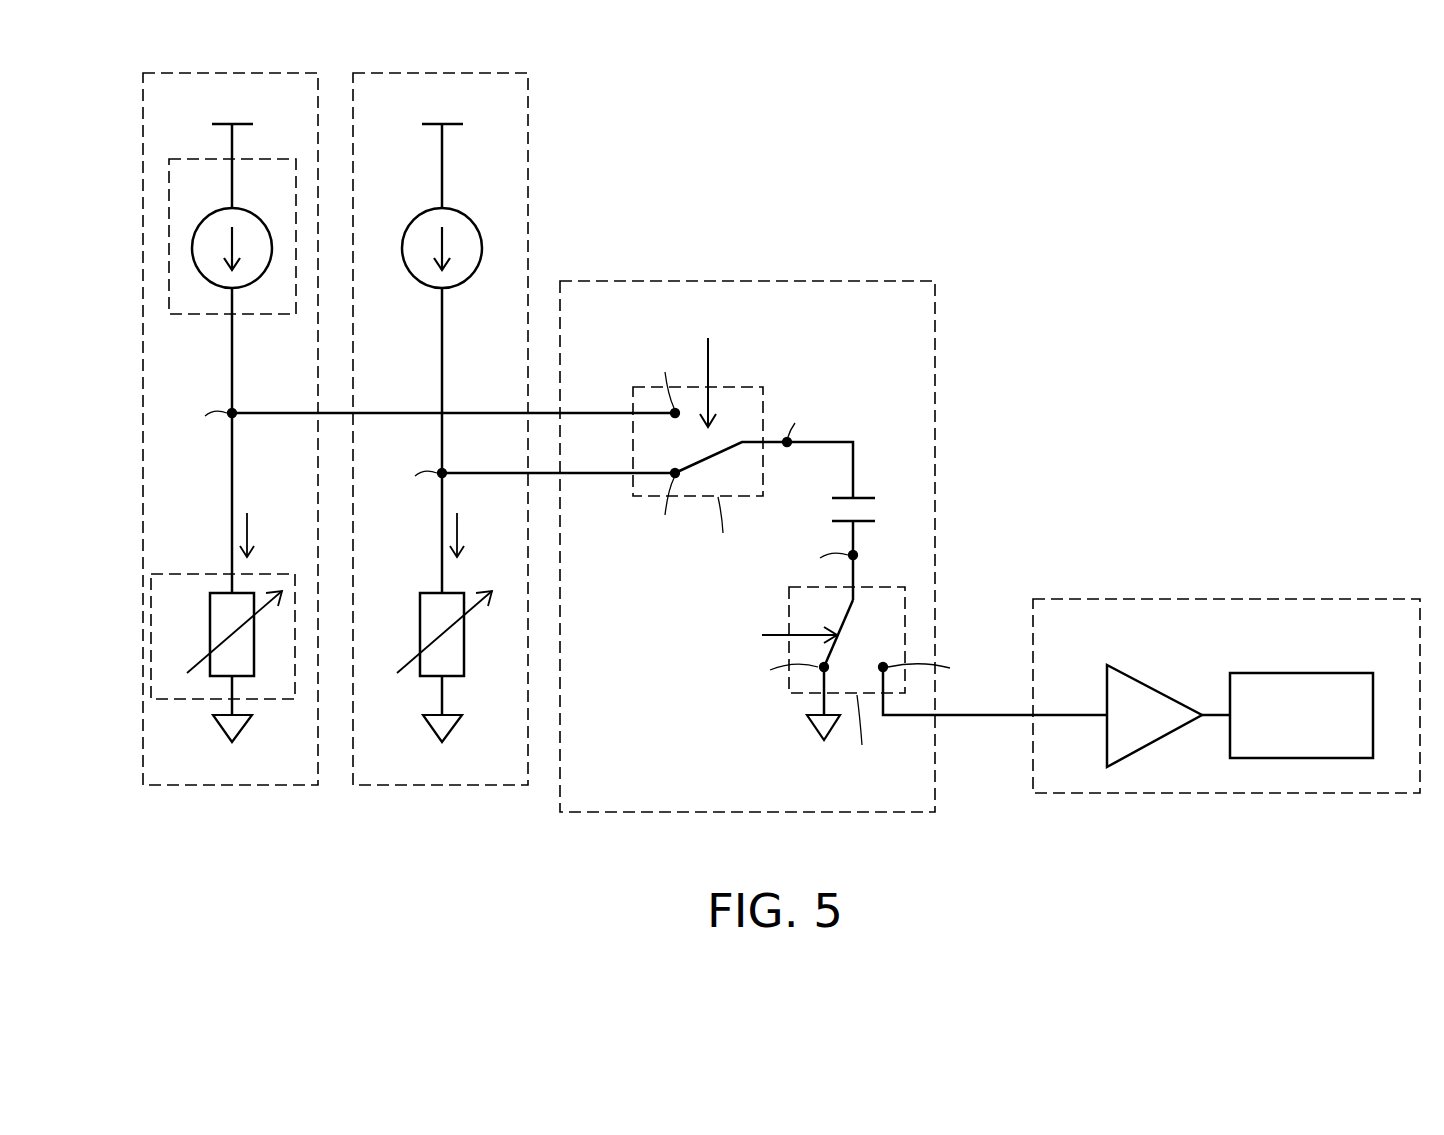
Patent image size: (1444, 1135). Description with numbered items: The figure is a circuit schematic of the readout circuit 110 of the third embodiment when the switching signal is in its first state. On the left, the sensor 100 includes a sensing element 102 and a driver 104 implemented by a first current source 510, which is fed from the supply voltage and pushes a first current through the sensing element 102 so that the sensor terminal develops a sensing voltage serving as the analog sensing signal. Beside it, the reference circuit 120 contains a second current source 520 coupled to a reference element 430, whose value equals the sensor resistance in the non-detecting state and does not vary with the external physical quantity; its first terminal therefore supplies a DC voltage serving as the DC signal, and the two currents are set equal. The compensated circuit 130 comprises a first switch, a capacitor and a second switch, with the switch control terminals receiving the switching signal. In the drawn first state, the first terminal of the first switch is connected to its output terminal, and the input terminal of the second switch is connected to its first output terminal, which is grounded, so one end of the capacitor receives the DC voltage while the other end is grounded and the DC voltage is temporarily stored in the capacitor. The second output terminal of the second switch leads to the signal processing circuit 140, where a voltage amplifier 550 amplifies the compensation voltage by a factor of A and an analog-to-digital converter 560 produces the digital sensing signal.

The sensor 100 is at (168, 787).
The sensing element 102 is at (187, 702).
The driver 104 is at (186, 316).
The readout circuit 110 is at (165, 923).
The reference circuit 120 is at (379, 787).
The compensated circuit 130 is at (843, 280).
The signal processing circuit 140 is at (1332, 598).
The reference element 430 is at (420, 632).
The first current source 510 is at (263, 223).
The second current source 520 is at (473, 223).
The voltage amplifier 550 is at (1157, 687).
The analog-to-digital converter 560 is at (1333, 672).